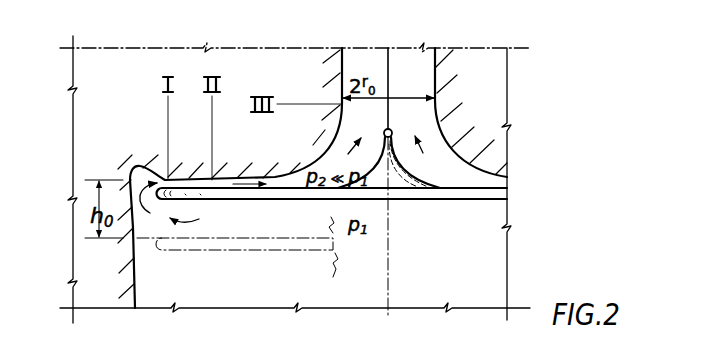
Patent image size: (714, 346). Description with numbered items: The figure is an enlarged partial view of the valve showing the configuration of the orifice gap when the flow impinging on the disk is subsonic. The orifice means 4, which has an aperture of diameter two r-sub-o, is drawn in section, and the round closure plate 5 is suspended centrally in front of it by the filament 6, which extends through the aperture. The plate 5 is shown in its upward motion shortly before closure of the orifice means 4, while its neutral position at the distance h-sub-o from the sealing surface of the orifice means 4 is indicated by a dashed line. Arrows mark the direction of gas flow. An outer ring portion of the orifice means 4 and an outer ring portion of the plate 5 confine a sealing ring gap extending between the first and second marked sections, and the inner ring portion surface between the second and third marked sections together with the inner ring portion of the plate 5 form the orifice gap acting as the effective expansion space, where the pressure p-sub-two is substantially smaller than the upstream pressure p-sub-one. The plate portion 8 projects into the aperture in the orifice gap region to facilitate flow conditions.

The orifice means 4 is at (493, 154).
The plate 5 is at (458, 193).
The filament 6 is at (389, 64).
The plate portion 8 is at (400, 187).